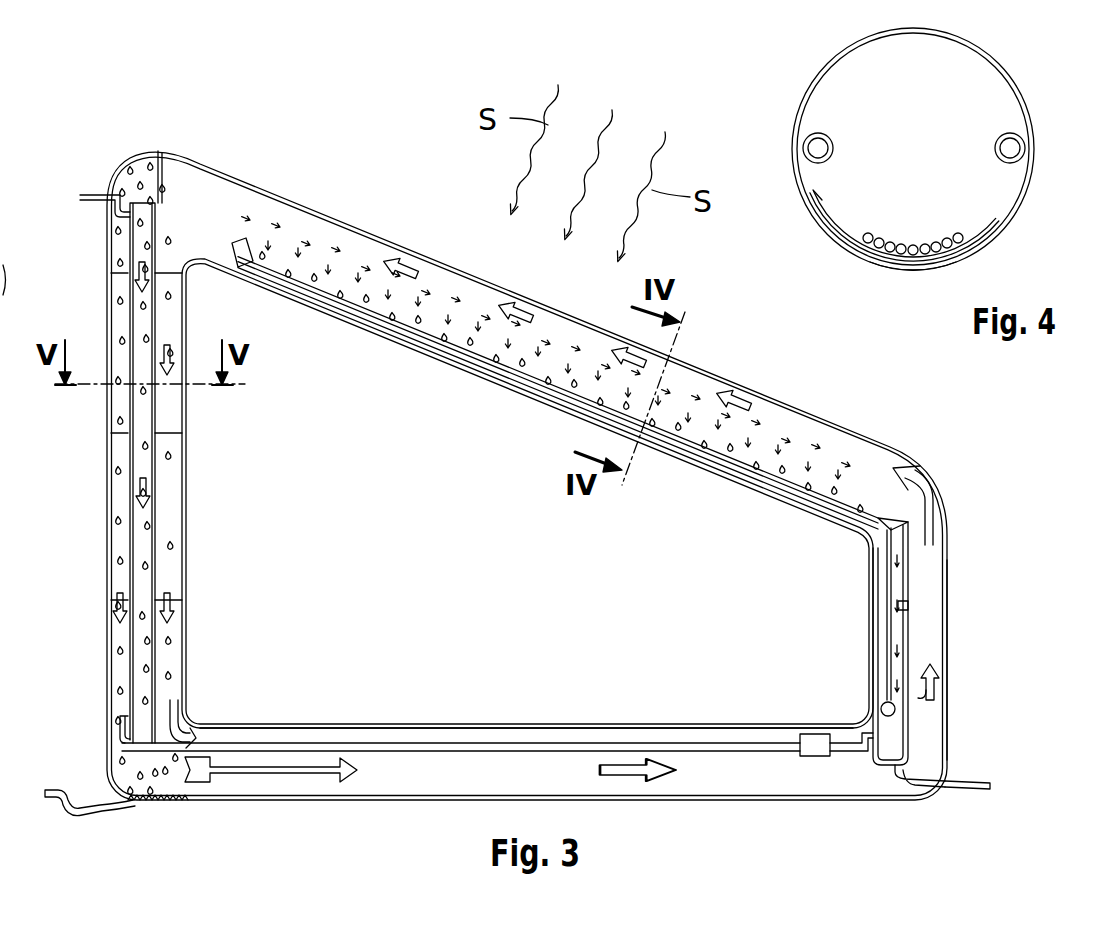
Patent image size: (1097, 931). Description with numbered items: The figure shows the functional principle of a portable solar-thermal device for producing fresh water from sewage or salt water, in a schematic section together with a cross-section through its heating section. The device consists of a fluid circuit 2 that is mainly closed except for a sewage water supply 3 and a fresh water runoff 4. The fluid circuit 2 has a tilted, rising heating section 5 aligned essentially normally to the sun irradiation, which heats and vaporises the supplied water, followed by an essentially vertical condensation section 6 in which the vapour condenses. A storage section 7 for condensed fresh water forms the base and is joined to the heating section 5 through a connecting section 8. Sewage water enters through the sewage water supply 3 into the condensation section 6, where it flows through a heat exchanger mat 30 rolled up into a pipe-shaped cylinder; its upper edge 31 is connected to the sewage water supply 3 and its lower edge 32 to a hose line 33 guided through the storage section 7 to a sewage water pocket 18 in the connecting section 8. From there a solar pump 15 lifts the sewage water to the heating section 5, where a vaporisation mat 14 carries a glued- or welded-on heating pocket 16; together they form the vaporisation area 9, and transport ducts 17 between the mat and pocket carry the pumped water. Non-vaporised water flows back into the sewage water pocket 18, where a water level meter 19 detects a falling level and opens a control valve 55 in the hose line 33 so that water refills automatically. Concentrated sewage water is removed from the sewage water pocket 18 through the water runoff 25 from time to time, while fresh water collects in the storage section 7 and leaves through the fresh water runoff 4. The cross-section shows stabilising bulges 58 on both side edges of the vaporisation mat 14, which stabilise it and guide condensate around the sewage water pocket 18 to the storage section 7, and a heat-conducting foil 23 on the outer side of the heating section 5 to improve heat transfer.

In FIG. 3, the fluid circuit 2 is at (194, 489).
In FIG. 3, the sewage water supply 3 is at (84, 193).
In FIG. 3, the fresh water runoff 4 is at (92, 803).
In FIG. 3, the heating section 5 is at (297, 204).
In FIG. 4, the heating section 5 is at (999, 66).
In FIG. 3, the condensation section 6 is at (107, 485).
In FIG. 3, the storage section 7 is at (503, 728).
In FIG. 3, the connecting section 8 is at (950, 642).
In FIG. 3, the vaporisation area 9 is at (370, 295).
In FIG. 4, the vaporisation area 9 is at (940, 235).
In FIG. 3, the vaporisation mat 14 is at (408, 332).
In FIG. 4, the vaporisation mat 14 is at (826, 205).
In FIG. 3, the solar pump 15 is at (881, 712).
In FIG. 3, the heating pocket 16 is at (740, 475).
In FIG. 4, the heating pocket 16 is at (912, 244).
In FIG. 4, the transport ducts 17 is at (882, 266).
In FIG. 3, the sewage water pocket 18 is at (915, 722).
In FIG. 3, the water level meter 19 is at (912, 605).
In FIG. 4, the heat-conducting foil 23 is at (823, 227).
In FIG. 3, the water runoff 25 is at (975, 782).
In FIG. 3, the heat exchanger mat 30 is at (132, 552).
In FIG. 3, the upper edge 31 is at (158, 158).
In FIG. 3, the lower edge 32 is at (128, 745).
In FIG. 3, the hose line 33 is at (412, 745).
In FIG. 3, the control valve 55 is at (820, 736).
In FIG. 4, the stabilising bulges 58 is at (806, 133).